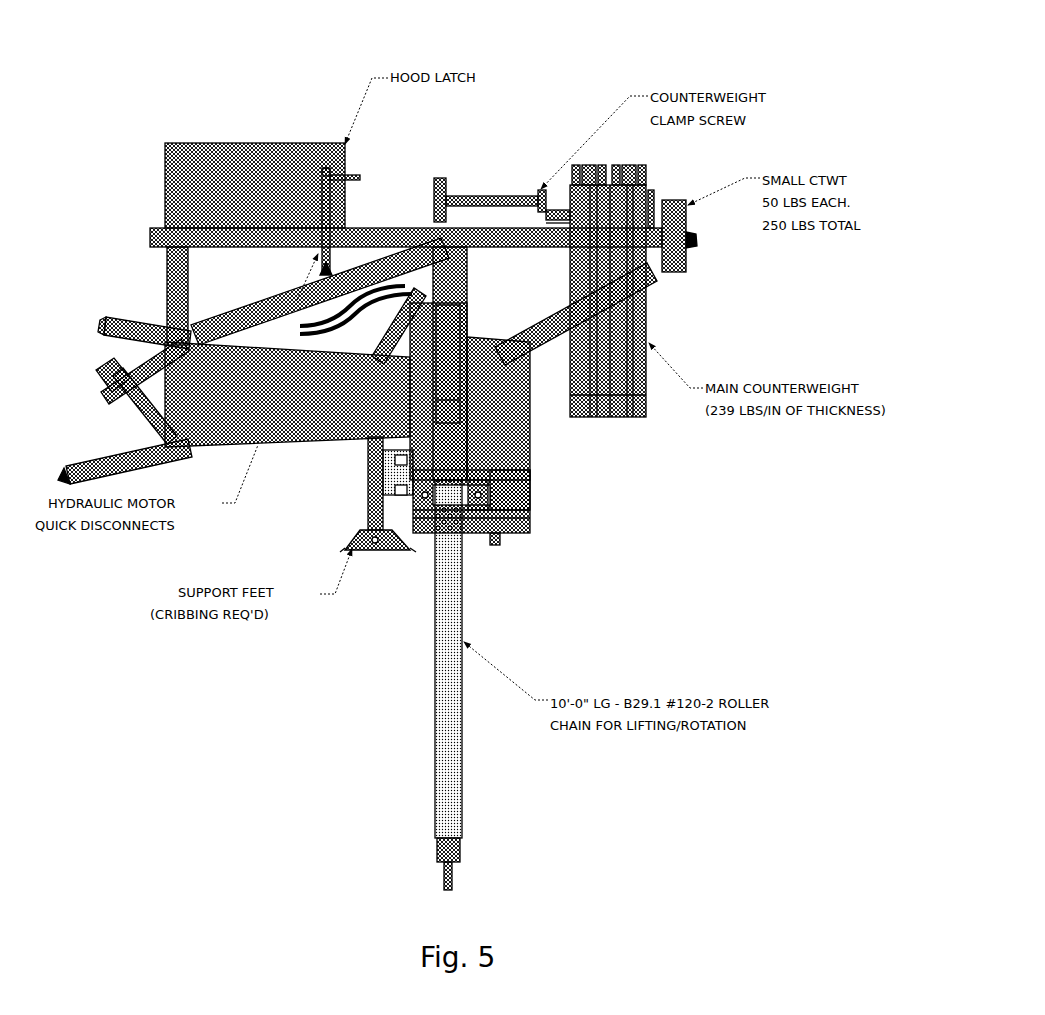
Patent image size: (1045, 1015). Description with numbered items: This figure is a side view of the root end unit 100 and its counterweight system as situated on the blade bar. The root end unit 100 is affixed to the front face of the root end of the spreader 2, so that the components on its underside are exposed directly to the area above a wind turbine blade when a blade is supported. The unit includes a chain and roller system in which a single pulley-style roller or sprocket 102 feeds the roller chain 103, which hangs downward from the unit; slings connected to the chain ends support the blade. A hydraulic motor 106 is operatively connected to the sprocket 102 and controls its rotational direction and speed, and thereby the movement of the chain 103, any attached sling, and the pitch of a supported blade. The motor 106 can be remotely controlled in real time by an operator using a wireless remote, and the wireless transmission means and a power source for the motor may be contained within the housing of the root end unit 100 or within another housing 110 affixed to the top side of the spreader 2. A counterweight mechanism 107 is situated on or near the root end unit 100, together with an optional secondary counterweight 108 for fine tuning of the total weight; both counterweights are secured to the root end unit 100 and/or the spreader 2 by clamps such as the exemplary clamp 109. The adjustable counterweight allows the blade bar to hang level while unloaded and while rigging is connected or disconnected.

The spreader 2 is at (100, 368).
The root end unit 100 is at (510, 387).
The roller or sprocket 102 is at (462, 490).
The roller chain 103 is at (453, 596).
The hydraulic motor 106 is at (398, 470).
The counterweight mechanism 107 is at (650, 305).
The secondary counterweight 108 is at (673, 197).
The clamp 109 is at (503, 186).
The housing 110 is at (198, 153).